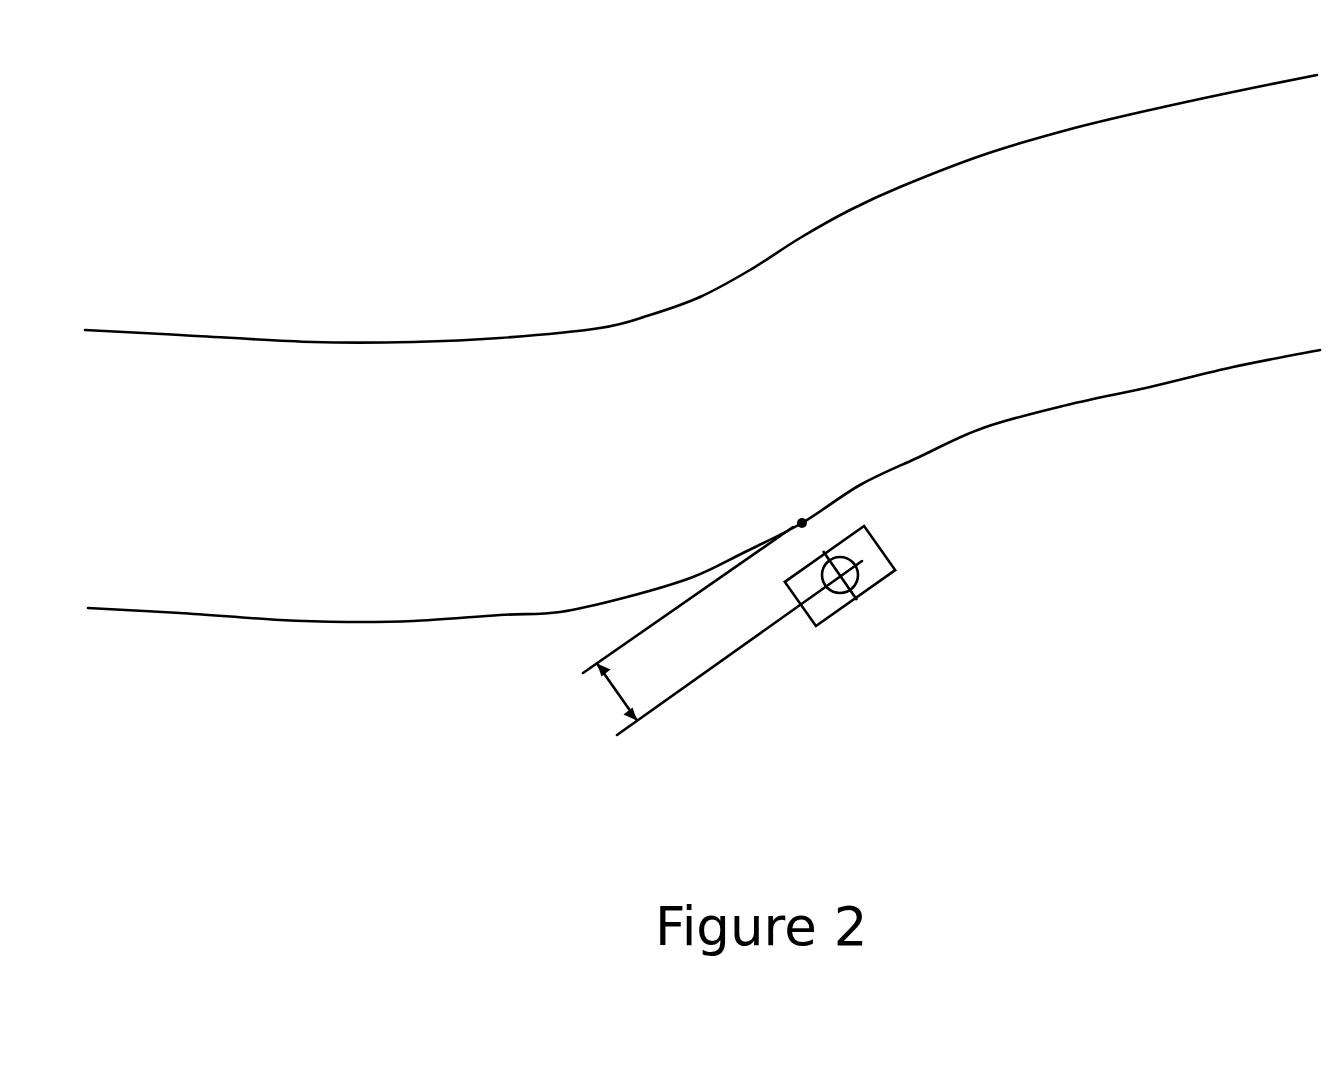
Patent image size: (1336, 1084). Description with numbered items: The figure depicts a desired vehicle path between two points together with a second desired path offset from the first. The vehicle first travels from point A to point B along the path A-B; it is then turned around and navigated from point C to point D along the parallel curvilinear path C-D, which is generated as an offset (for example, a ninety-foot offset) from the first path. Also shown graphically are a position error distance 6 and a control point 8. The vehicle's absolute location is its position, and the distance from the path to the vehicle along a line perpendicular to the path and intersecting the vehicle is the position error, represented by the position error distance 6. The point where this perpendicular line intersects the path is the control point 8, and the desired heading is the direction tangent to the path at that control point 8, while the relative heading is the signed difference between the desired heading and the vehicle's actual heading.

The position error distance 6 is at (613, 698).
The control point 8 is at (802, 522).
The point A is at (445, 572).
The point B is at (1061, 415).
The point C is at (1008, 167).
The point D is at (392, 313).